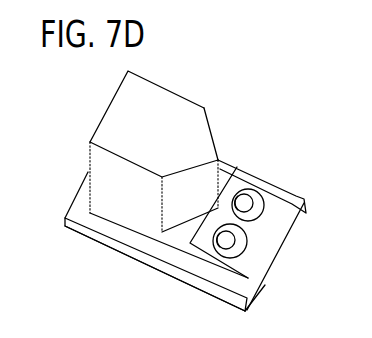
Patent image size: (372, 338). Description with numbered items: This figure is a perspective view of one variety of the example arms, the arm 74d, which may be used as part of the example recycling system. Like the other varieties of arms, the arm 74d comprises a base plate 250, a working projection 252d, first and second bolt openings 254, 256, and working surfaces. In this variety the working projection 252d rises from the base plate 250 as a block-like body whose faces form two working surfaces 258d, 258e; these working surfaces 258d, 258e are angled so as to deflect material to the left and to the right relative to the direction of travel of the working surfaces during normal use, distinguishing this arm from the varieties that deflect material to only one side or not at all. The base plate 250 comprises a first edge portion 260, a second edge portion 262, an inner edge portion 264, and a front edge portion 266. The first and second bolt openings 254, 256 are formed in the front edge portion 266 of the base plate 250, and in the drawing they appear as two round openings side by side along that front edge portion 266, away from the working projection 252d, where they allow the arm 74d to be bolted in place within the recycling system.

The arm 74d is at (93, 103).
The working projection 252d is at (173, 107).
The working surface 258e is at (216, 142).
The working surface 258d is at (178, 207).
The second edge portion 262 is at (265, 183).
The front edge portion 266 is at (281, 233).
The second bolt opening 256 is at (264, 203).
The first bolt opening 254 is at (248, 253).
The inner edge portion 264 is at (77, 195).
The first edge portion 260 is at (110, 250).
The base plate 250 is at (150, 253).